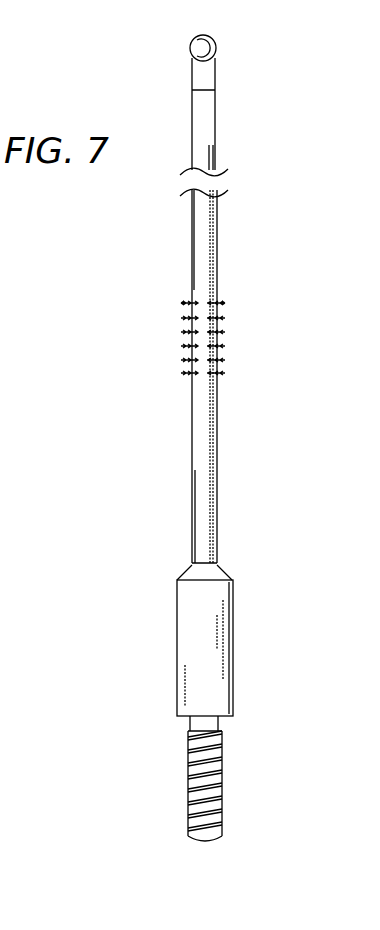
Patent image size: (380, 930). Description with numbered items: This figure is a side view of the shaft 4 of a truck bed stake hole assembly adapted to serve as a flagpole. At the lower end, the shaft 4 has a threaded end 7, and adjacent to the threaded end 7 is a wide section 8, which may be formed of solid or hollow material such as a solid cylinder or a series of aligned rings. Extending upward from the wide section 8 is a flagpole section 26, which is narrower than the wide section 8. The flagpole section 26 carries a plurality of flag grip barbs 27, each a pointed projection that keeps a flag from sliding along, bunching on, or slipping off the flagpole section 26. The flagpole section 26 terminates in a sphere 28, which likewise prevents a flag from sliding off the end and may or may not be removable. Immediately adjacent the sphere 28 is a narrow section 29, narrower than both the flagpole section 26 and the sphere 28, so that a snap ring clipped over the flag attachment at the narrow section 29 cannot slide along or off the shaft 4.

The sphere 28 is at (207, 34).
The narrow section 29 is at (201, 80).
The flag grip barbs 27 is at (218, 357).
The flagpole section 26 is at (202, 463).
The shaft 4 is at (218, 515).
The wide section 8 is at (200, 615).
The threaded end 7 is at (210, 780).